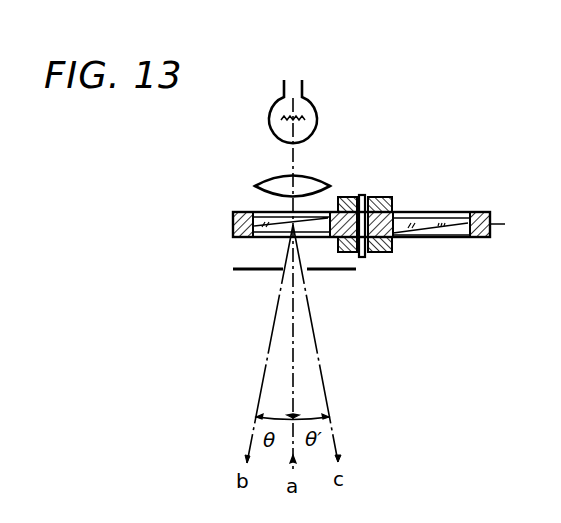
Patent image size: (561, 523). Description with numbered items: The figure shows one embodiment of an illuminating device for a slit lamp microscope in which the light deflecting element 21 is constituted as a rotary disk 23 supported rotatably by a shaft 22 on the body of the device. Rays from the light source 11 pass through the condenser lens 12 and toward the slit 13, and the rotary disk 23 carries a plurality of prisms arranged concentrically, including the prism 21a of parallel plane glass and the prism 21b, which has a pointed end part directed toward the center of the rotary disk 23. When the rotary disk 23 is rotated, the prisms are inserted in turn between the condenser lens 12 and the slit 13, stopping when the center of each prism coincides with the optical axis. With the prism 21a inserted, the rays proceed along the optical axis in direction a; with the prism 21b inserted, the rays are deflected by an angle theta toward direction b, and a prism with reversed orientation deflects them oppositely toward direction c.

The light source 11 is at (314, 120).
The condenser lens 12 is at (320, 178).
The slit 13 is at (285, 266).
The light deflecting element 21 is at (408, 198).
The prism 21a is at (446, 221).
The prism 21b is at (270, 214).
The shaft 22 is at (365, 256).
The rotary disk 23 is at (490, 224).